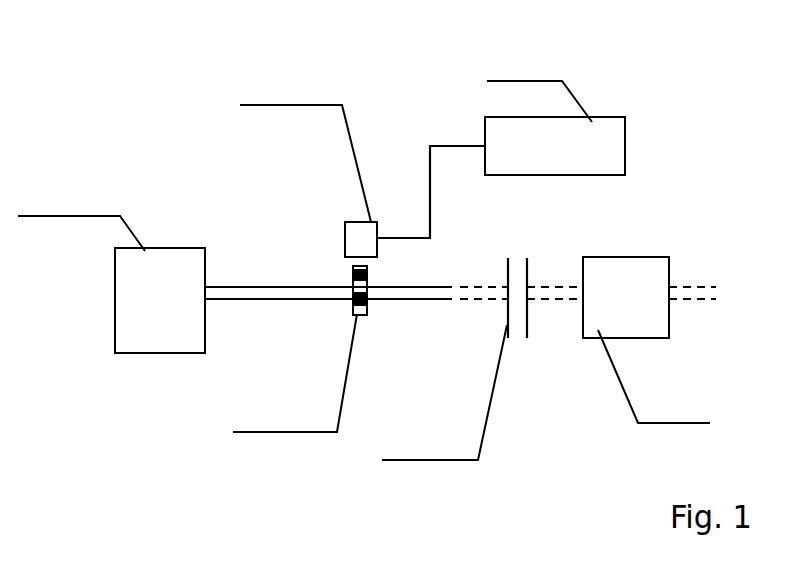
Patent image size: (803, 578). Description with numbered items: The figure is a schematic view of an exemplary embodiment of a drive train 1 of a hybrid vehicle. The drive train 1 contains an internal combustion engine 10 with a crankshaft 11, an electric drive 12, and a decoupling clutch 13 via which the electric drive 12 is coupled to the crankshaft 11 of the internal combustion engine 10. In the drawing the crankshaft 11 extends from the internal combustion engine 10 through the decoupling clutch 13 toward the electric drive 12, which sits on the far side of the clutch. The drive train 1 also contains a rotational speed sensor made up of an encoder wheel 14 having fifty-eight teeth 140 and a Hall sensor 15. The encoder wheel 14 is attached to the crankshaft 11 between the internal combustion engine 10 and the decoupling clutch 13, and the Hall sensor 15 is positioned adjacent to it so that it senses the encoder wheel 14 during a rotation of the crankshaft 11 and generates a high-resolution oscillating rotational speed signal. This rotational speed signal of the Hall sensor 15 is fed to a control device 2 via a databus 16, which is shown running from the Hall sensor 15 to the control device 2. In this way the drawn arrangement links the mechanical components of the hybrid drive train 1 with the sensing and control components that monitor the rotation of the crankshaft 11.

The drive train 1 is at (222, 126).
The control device 2 is at (545, 161).
The internal combustion engine 10 is at (147, 317).
The crankshaft 11 is at (288, 298).
The electric drive 12 is at (611, 314).
The decoupling clutch 13 is at (515, 343).
The encoder wheel 14 is at (321, 326).
The Hall sensor 15 is at (357, 222).
The databus 16 is at (429, 147).
The teeth 140 is at (348, 281).